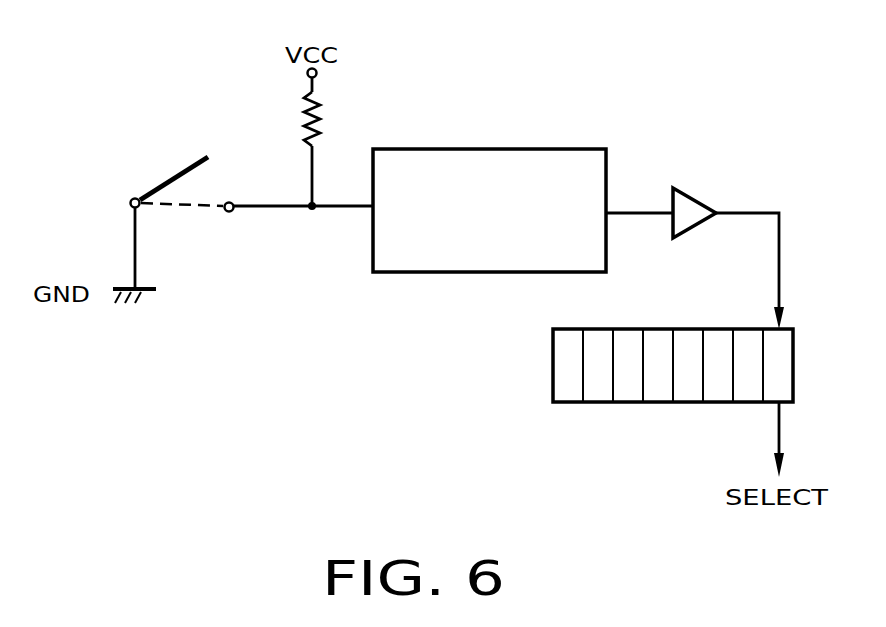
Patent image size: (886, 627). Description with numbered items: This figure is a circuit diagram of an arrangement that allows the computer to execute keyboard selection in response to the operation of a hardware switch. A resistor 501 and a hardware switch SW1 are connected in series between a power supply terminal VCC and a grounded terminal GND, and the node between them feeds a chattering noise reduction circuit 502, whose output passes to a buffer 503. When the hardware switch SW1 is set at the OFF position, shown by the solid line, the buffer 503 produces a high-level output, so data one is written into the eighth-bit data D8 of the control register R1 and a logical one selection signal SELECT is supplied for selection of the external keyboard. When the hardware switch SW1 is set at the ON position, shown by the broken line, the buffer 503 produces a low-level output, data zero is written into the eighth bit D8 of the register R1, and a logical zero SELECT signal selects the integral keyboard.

The resistor 501 is at (322, 103).
The chattering noise reduction circuit 502 is at (552, 149).
The buffer 503 is at (688, 193).
The hardware switch SW1 is at (158, 187).
The control register R1 is at (662, 329).
The eighth bit data D8 is at (780, 363).